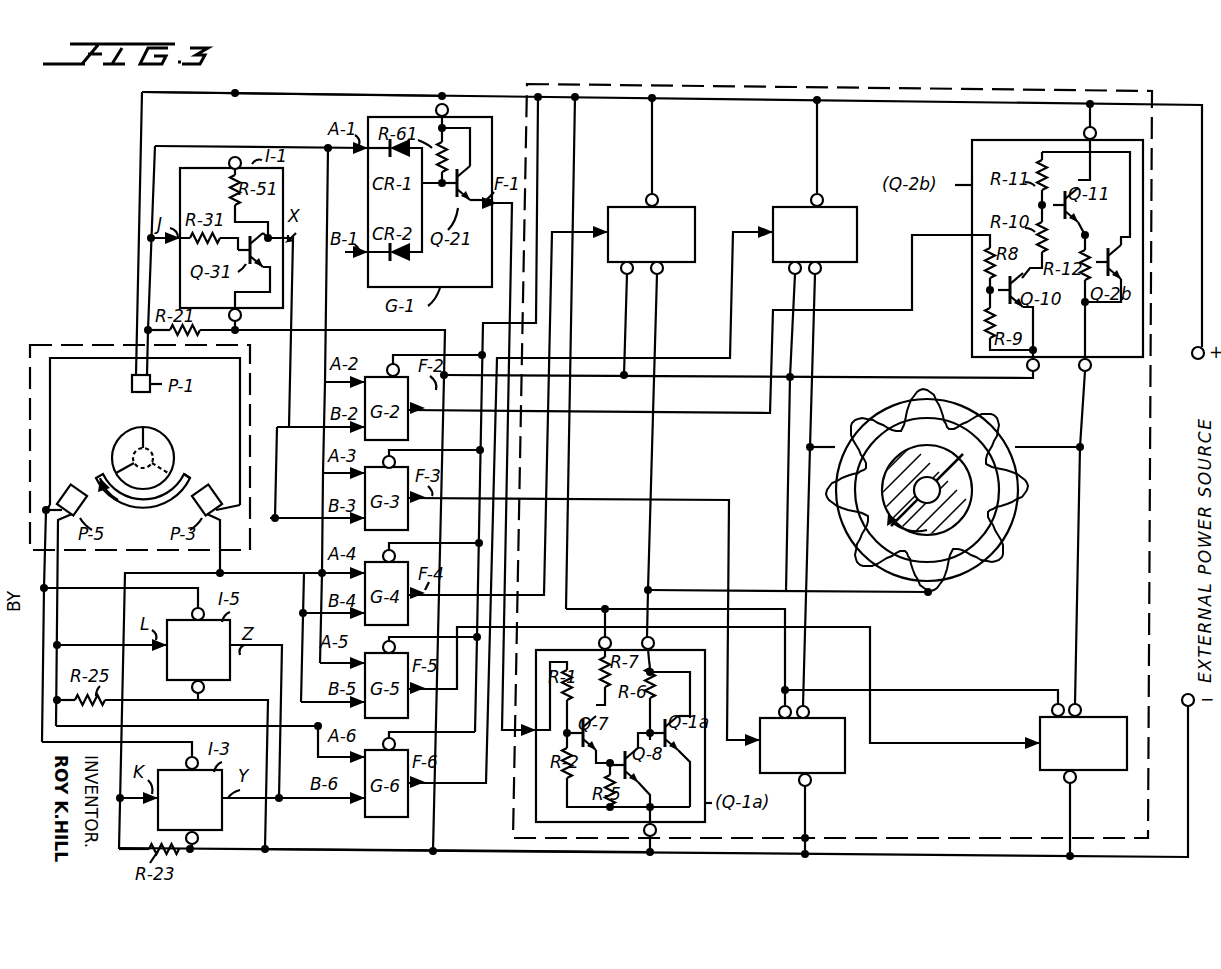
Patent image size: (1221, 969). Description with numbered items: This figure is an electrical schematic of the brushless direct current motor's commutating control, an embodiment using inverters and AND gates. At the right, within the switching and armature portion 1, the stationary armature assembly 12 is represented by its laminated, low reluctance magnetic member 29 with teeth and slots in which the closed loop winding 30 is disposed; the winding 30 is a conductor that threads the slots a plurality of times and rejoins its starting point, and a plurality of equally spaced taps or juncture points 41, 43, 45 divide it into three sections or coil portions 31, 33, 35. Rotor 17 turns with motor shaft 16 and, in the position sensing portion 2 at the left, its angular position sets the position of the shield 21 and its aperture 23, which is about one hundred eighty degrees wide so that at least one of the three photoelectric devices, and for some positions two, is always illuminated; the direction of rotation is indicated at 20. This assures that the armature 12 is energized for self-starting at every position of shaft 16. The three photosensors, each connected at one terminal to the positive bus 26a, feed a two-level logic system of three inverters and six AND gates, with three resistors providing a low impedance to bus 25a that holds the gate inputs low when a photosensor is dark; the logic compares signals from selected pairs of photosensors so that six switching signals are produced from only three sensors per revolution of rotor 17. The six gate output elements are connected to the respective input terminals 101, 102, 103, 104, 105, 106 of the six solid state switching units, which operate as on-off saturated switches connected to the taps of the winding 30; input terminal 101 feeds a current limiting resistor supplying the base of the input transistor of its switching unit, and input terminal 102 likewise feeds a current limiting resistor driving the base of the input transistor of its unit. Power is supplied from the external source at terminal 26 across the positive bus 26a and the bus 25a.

The motor control circuit 1 is at (832, 451).
The position sensing assembly 2 is at (50, 346).
The stationary armature assembly 12 is at (933, 519).
The motor shaft 16 is at (112, 445).
The rotor 17 is at (945, 478).
The direction of rotation 20 is at (158, 432).
The shield 21 is at (193, 475).
The aperture 23 is at (186, 454).
The power supply terminal 26 is at (1195, 352).
The positive bus 26a is at (328, 94).
The bus 25a is at (342, 852).
The low reluctance magnetic member 29 is at (888, 562).
The closed loop winding 30 is at (1020, 524).
The coil portion 31 is at (858, 553).
The coil portion 33 is at (962, 410).
The coil portion 35 is at (988, 573).
The tap 41 is at (928, 592).
The tap 43 is at (837, 443).
The tap 45 is at (1018, 444).
The input terminal 101 is at (522, 740).
The input terminal 102 is at (963, 238).
The input terminal 103 is at (753, 738).
The input terminal 104 is at (598, 228).
The input terminal 105 is at (1037, 752).
The input terminal 106 is at (766, 228).